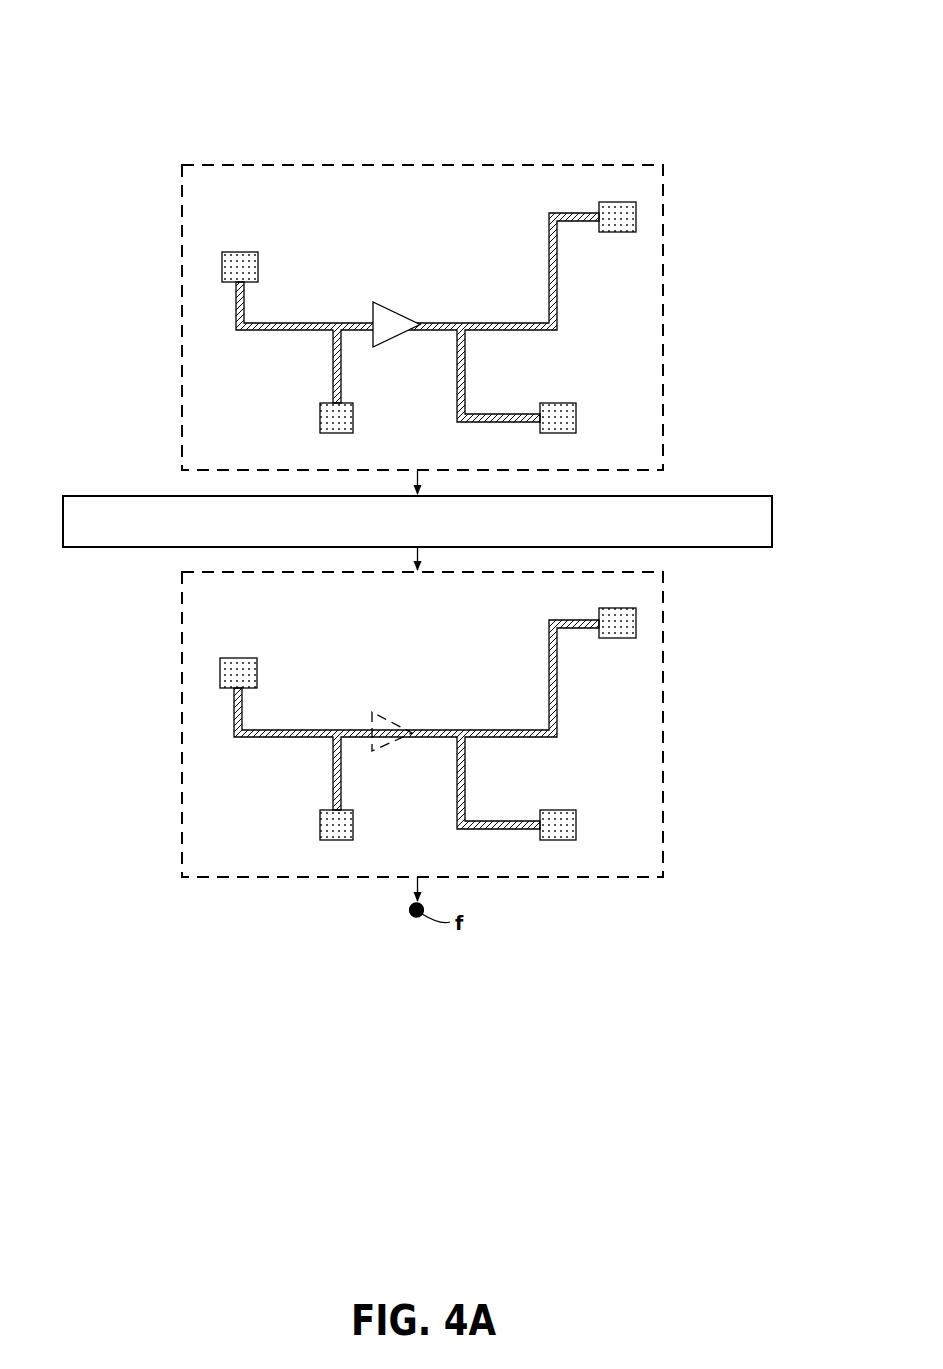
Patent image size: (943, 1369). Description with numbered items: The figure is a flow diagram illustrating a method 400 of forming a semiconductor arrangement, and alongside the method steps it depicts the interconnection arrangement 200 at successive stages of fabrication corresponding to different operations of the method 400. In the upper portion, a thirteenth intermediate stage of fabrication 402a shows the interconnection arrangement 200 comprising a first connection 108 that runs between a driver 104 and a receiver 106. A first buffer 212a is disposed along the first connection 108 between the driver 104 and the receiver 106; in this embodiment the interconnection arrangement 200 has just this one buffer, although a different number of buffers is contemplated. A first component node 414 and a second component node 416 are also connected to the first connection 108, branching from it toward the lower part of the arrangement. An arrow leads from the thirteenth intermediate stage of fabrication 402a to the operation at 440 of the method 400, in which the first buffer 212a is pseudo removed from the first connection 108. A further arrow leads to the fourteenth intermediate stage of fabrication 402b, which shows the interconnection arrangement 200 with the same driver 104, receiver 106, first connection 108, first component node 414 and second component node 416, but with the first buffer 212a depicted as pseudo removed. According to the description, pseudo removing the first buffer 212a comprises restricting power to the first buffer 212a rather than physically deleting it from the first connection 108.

The method 400 is at (135, 36).
The interconnection arrangement 200 is at (270, 210).
The driver 104 is at (235, 252).
The receiver 106 is at (636, 218).
The first connection 108 is at (292, 332).
The first buffer 212a is at (386, 318).
The first component node 414 is at (346, 412).
The second component node 416 is at (561, 417).
The thirteenth intermediate stage of fabrication 402a is at (663, 270).
The fourteenth intermediate stage of fabrication 402b is at (663, 677).
The pseudo removing operation 440 is at (772, 518).